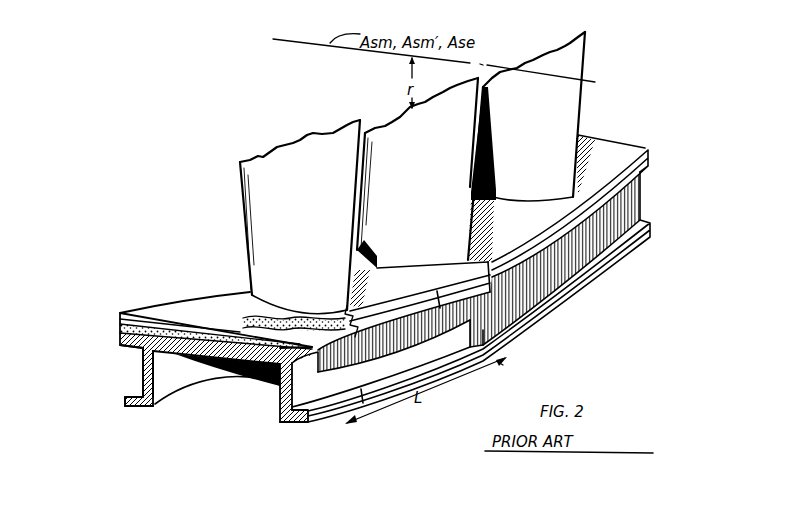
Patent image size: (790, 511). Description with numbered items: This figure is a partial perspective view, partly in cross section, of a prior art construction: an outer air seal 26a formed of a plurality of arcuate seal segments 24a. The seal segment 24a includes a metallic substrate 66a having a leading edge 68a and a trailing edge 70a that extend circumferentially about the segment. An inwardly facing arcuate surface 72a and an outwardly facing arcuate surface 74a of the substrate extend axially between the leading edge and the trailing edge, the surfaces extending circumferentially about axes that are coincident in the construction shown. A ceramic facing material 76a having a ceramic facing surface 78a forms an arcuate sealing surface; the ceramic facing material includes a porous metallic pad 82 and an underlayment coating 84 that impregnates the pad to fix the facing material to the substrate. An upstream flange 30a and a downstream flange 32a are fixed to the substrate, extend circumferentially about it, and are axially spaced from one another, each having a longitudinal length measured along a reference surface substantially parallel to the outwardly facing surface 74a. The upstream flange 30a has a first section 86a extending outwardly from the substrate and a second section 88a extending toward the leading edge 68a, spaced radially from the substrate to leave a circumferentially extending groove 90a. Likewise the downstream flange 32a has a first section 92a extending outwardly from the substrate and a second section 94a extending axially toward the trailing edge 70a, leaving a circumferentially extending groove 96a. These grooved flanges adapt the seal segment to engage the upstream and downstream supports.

The seal segment 24a is at (116, 321).
The outer air seal 26a is at (606, 125).
The upstream flange 30a is at (138, 376).
The downstream flange 32a is at (278, 390).
The metallic substrate 66a is at (208, 360).
The leading edge 68a is at (118, 336).
The trailing edge 70a is at (354, 348).
The inwardly facing arcuate surface 72a is at (315, 350).
The outwardly facing arcuate surface 74a is at (176, 350).
The ceramic facing material 76a is at (652, 168).
The ceramic facing surface 78a is at (200, 307).
The porous metallic pad 82 is at (351, 311).
The underlayment coating 84 is at (258, 321).
The first section 86a is at (140, 383).
The second section 88a is at (125, 408).
The groove 90a is at (137, 372).
The first section 92a is at (293, 383).
The second section 94a is at (290, 424).
The groove 96a is at (452, 359).